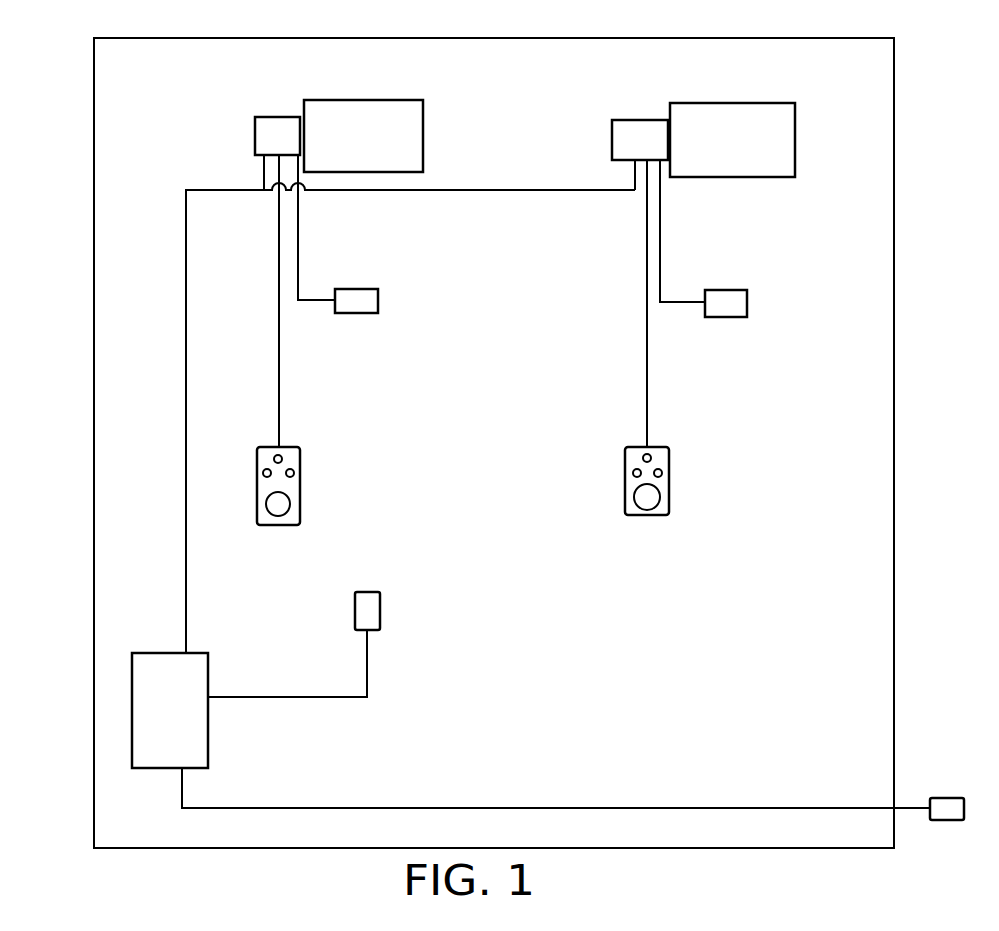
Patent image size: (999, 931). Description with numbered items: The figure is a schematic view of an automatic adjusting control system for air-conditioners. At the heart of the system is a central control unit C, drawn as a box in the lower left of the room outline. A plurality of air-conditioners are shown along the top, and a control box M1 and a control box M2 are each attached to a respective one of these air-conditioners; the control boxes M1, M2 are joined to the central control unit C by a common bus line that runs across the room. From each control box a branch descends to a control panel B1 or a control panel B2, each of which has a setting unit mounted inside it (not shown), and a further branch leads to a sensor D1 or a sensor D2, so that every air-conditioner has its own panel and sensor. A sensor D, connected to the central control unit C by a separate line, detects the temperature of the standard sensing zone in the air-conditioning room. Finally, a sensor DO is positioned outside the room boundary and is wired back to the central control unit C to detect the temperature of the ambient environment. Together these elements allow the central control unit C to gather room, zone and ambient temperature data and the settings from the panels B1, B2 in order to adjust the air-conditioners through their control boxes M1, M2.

The control box M1 is at (277, 136).
The control box M2 is at (640, 141).
The sensor D1 is at (338, 256).
The sensor D2 is at (713, 262).
The control panel B1 is at (303, 346).
The control panel B2 is at (675, 348).
The central control unit C is at (170, 710).
The sensor D is at (313, 644).
The sensor DO is at (578, 786).